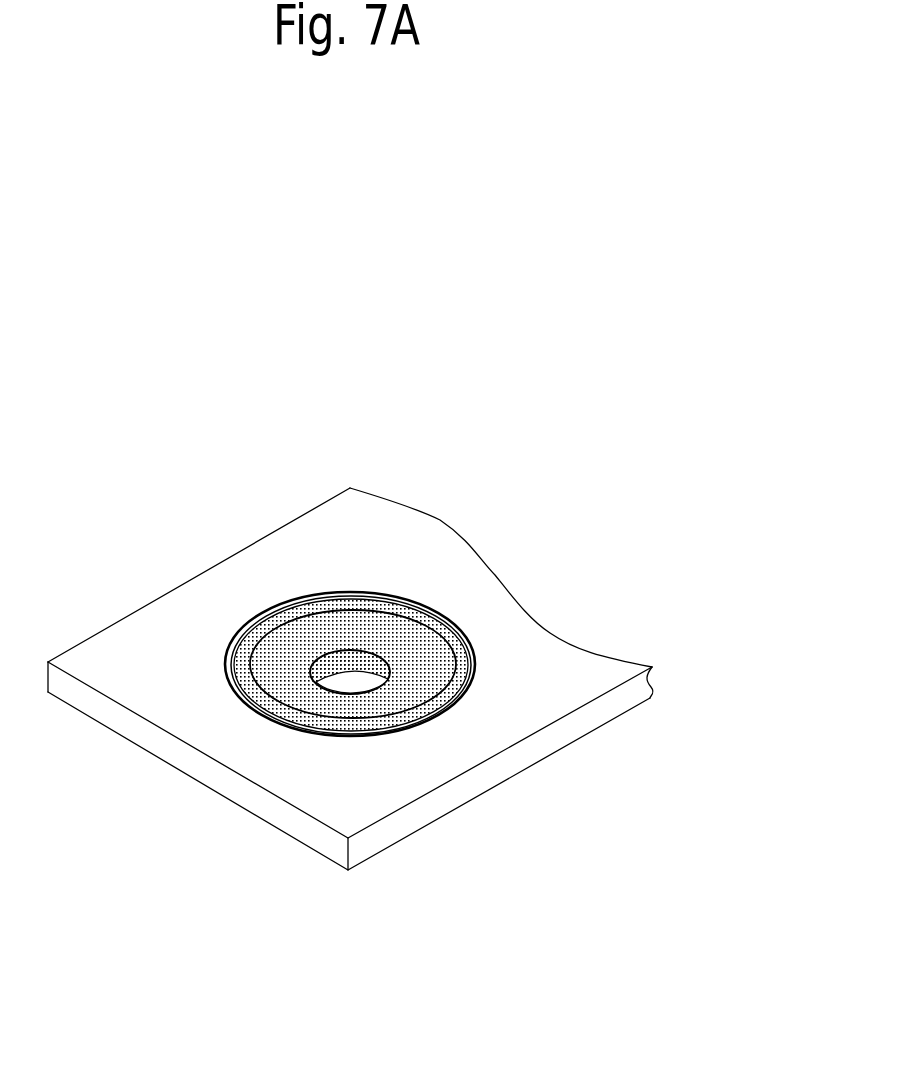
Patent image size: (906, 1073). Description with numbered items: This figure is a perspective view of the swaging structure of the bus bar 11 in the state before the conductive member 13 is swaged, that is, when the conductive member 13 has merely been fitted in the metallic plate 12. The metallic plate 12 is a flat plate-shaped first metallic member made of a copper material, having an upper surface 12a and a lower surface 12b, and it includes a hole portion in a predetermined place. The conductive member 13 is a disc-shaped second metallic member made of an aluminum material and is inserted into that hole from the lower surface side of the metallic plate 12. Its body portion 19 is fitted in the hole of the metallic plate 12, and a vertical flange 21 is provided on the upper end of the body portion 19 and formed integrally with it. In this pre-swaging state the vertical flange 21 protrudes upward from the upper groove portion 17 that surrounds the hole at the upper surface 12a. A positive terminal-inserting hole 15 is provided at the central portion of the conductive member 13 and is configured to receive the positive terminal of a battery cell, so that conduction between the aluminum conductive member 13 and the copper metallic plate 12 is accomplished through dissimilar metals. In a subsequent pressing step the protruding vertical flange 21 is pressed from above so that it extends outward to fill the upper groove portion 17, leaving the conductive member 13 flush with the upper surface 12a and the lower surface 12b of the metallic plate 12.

The bus bar 11 is at (513, 552).
The metallic plate 12 is at (673, 685).
The upper surface 12a is at (85, 657).
The lower surface 12b is at (85, 716).
The conductive member 13 is at (388, 585).
The positive terminal-inserting hole 15 is at (338, 680).
The upper groove portion 17 is at (228, 657).
The body portion 19 is at (421, 684).
The vertical flange 21 is at (260, 613).